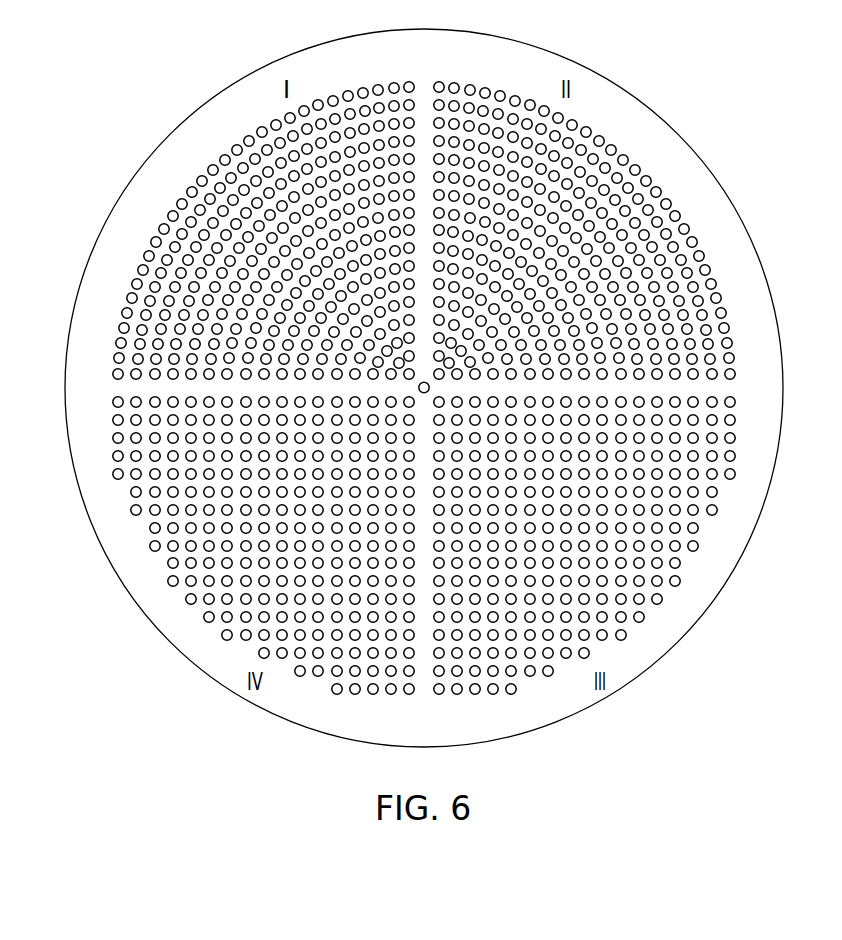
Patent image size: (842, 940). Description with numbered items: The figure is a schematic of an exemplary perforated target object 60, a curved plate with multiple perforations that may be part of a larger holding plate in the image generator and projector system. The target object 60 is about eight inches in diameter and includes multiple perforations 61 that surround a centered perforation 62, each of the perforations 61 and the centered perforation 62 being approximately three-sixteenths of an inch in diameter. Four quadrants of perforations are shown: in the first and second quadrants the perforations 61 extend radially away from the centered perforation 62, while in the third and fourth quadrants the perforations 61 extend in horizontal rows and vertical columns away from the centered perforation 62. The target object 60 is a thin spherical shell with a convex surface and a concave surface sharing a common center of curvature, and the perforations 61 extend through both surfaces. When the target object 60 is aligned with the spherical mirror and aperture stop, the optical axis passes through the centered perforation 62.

The target object 60 is at (168, 164).
The perforations 61 is at (121, 300).
The centered perforation 62 is at (430, 386).